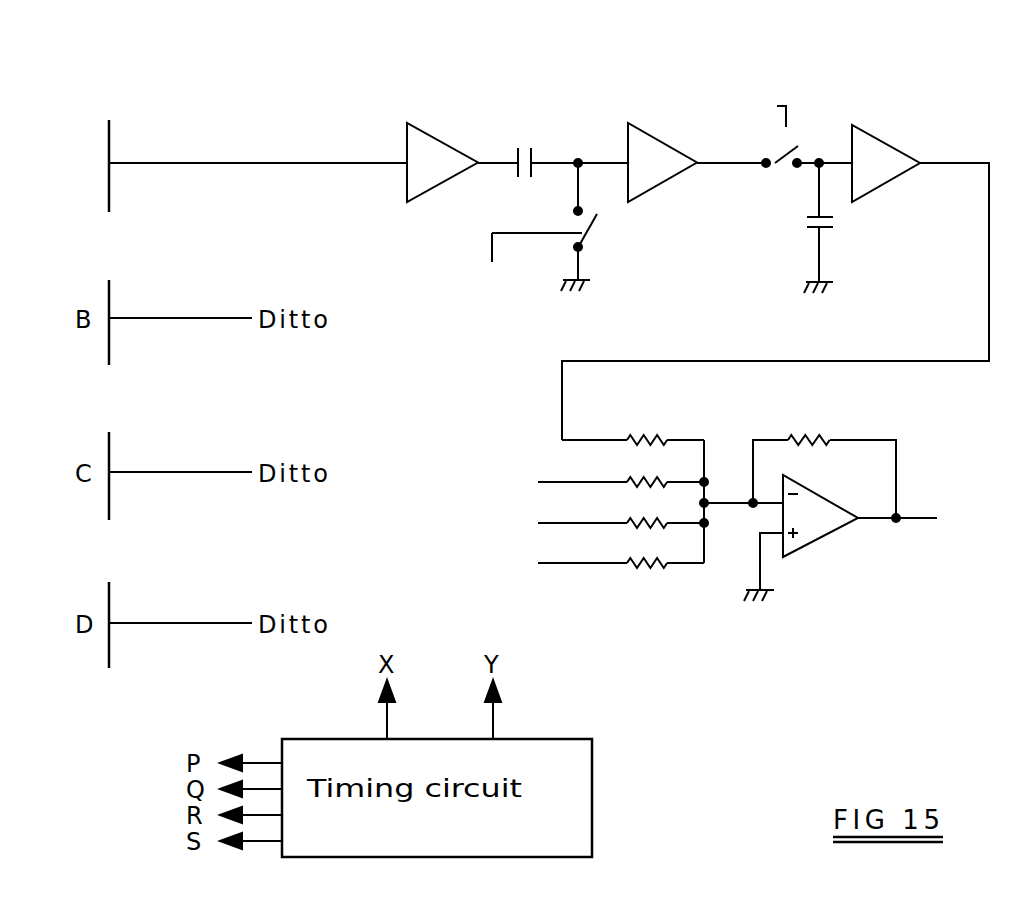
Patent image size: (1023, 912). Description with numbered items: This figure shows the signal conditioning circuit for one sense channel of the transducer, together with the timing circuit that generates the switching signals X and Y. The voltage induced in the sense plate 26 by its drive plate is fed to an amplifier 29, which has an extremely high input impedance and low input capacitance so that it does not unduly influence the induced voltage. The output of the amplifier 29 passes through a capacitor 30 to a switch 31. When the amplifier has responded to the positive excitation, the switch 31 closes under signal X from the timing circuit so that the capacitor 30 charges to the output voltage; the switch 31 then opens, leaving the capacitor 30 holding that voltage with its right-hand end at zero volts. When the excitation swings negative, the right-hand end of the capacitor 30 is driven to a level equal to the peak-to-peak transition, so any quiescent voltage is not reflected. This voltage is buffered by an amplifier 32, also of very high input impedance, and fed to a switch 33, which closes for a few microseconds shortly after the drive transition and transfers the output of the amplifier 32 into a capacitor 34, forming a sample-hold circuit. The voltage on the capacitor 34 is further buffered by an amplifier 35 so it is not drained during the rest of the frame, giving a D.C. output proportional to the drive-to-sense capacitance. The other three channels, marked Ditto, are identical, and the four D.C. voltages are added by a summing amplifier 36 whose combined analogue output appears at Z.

The fourth plate 26 is at (109, 124).
The amplifier 29 is at (455, 143).
The capacitor 30 is at (533, 157).
The switch 31 is at (587, 233).
The amplifier 32 is at (663, 141).
The switch 33 is at (781, 173).
The capacitor 34 is at (826, 228).
The amplifier 35 is at (895, 180).
The summing amplifier 36 is at (905, 616).